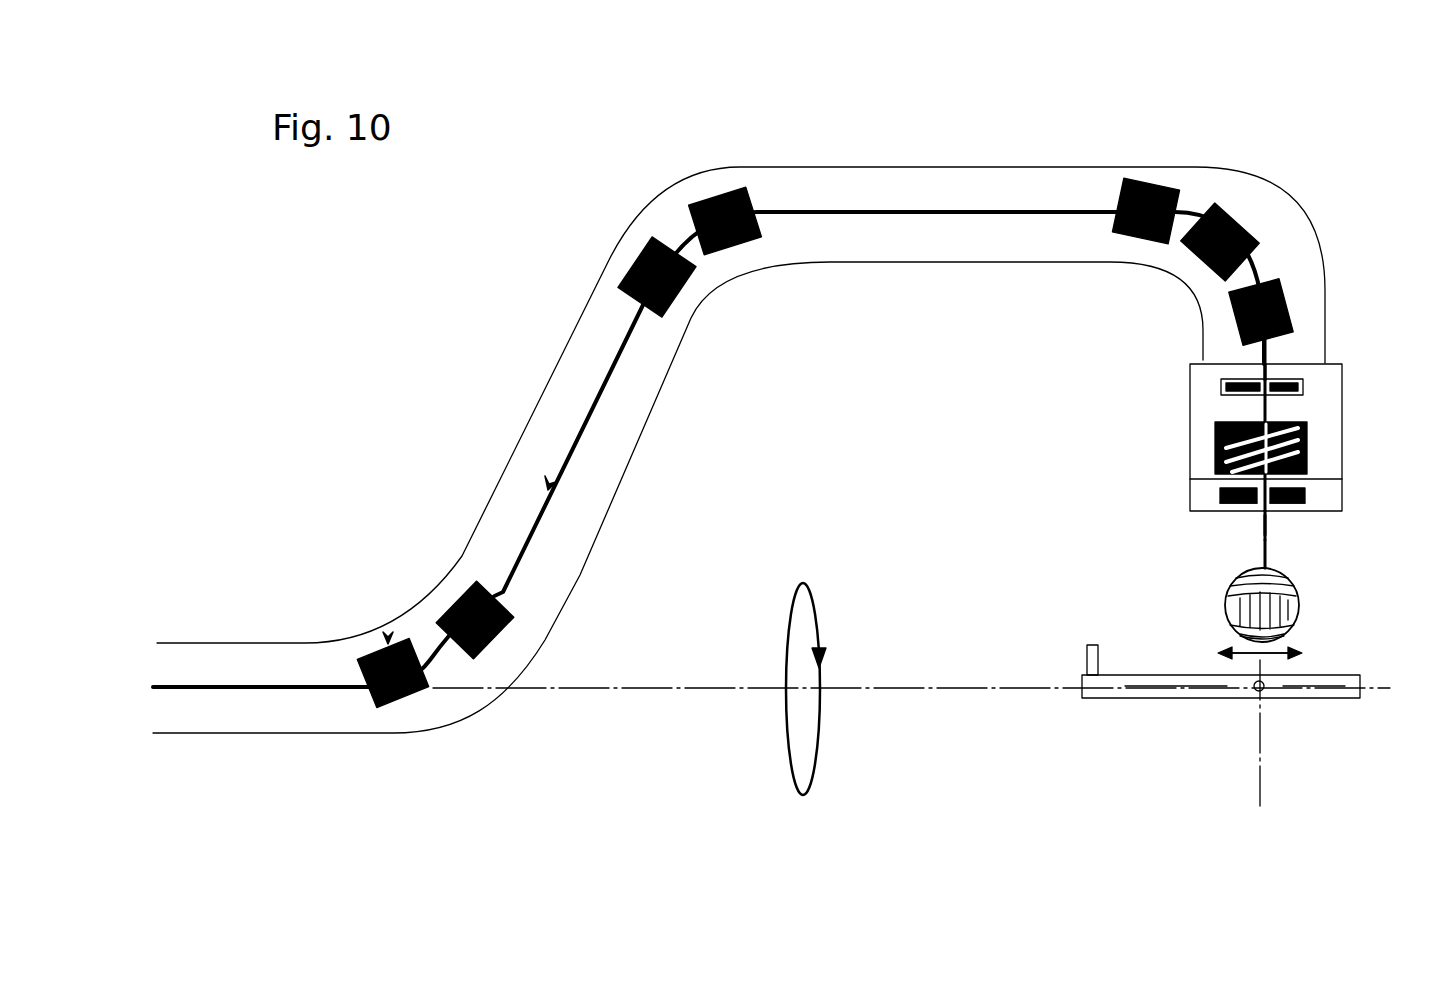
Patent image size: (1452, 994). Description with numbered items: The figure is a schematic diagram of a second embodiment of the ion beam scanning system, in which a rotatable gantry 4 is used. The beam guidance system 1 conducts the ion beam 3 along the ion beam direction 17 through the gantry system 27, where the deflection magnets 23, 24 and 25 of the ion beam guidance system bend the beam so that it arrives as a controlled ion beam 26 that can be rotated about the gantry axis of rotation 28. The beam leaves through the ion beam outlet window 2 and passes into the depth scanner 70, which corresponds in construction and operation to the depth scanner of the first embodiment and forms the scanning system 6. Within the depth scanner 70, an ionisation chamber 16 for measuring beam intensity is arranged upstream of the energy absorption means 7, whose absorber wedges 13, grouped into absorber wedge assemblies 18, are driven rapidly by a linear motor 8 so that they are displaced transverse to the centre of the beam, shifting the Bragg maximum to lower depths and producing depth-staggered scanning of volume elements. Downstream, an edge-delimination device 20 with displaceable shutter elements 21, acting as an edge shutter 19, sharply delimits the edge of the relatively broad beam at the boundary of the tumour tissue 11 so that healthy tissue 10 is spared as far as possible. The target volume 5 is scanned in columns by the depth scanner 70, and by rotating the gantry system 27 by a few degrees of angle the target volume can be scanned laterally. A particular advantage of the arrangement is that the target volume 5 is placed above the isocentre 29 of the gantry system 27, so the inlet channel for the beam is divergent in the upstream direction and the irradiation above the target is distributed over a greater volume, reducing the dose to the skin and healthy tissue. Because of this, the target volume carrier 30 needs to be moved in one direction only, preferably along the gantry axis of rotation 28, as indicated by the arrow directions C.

The beam guidance system 1 is at (873, 212).
The ion beam outlet window 2 is at (1266, 345).
The ion beam 3 is at (1267, 540).
The gantry 4 is at (1232, 167).
The target volume 5 is at (1226, 584).
The scanning system 6 is at (1321, 622).
The energy absorption means 7 is at (1307, 423).
The linear motor 8 is at (1240, 634).
The healthy tissue 10 is at (1358, 668).
The tumour tissue 11 is at (1299, 590).
The absorber wedges 13 is at (1215, 441).
The ionisation chamber 16 is at (1218, 390).
The ion beam direction 17 is at (1270, 520).
The absorber wedge assemblies 18 is at (1307, 456).
The edge shutter 19 is at (1198, 513).
The edge-delimination device 20 is at (1217, 496).
The shutter elements 21 is at (1232, 509).
The deflection magnet 23 is at (1295, 302).
The deflection magnet 24 is at (1242, 222).
The deflection magnet 25 is at (1145, 182).
The controlled ion beam 26 is at (1358, 512).
The gantry system 27 is at (900, 360).
The gantry axis of rotation 28 is at (700, 690).
The isocentre 29 is at (1262, 696).
The target volume carrier 30 is at (1150, 696).
The depth scanner 70 is at (1345, 390).
The arrow directions C is at (1245, 665).